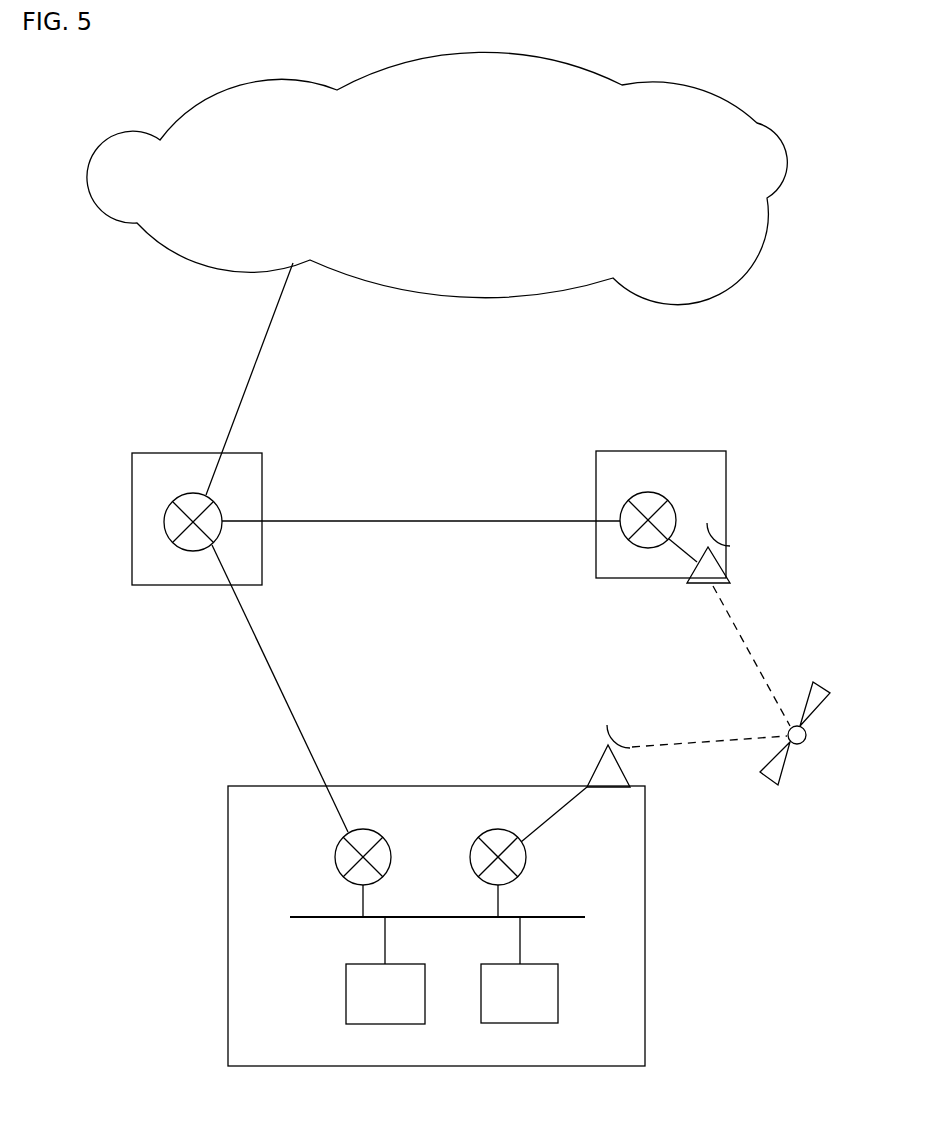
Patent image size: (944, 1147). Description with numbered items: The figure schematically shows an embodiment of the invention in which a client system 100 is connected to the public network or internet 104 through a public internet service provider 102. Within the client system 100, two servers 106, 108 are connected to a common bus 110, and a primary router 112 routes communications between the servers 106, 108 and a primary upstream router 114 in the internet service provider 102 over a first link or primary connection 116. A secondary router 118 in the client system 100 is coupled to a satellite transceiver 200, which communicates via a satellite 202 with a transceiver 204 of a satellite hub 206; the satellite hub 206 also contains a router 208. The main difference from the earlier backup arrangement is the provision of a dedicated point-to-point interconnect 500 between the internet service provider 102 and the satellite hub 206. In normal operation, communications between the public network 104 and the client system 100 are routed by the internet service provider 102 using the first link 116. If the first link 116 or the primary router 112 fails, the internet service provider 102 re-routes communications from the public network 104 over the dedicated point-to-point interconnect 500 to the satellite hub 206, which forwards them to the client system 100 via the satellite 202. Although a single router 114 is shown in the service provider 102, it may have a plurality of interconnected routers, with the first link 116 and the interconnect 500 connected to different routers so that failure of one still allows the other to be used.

The client system 100 is at (226, 1018).
The internet service provider 102 is at (130, 562).
The internet 104 is at (177, 259).
The server 106 is at (375, 1025).
The server 108 is at (530, 1024).
The common bus 110 is at (545, 918).
The primary router 112 is at (334, 853).
The primary upstream router 114 is at (224, 514).
The primary connection 116 is at (268, 670).
The secondary router 118 is at (527, 848).
The satellite transceiver 200 is at (590, 768).
The satellite 202 is at (808, 742).
The transceiver 204 is at (697, 585).
The satellite hub 206 is at (728, 450).
The router 208 is at (677, 508).
The dedicated point-to-point interconnect 500 is at (441, 520).